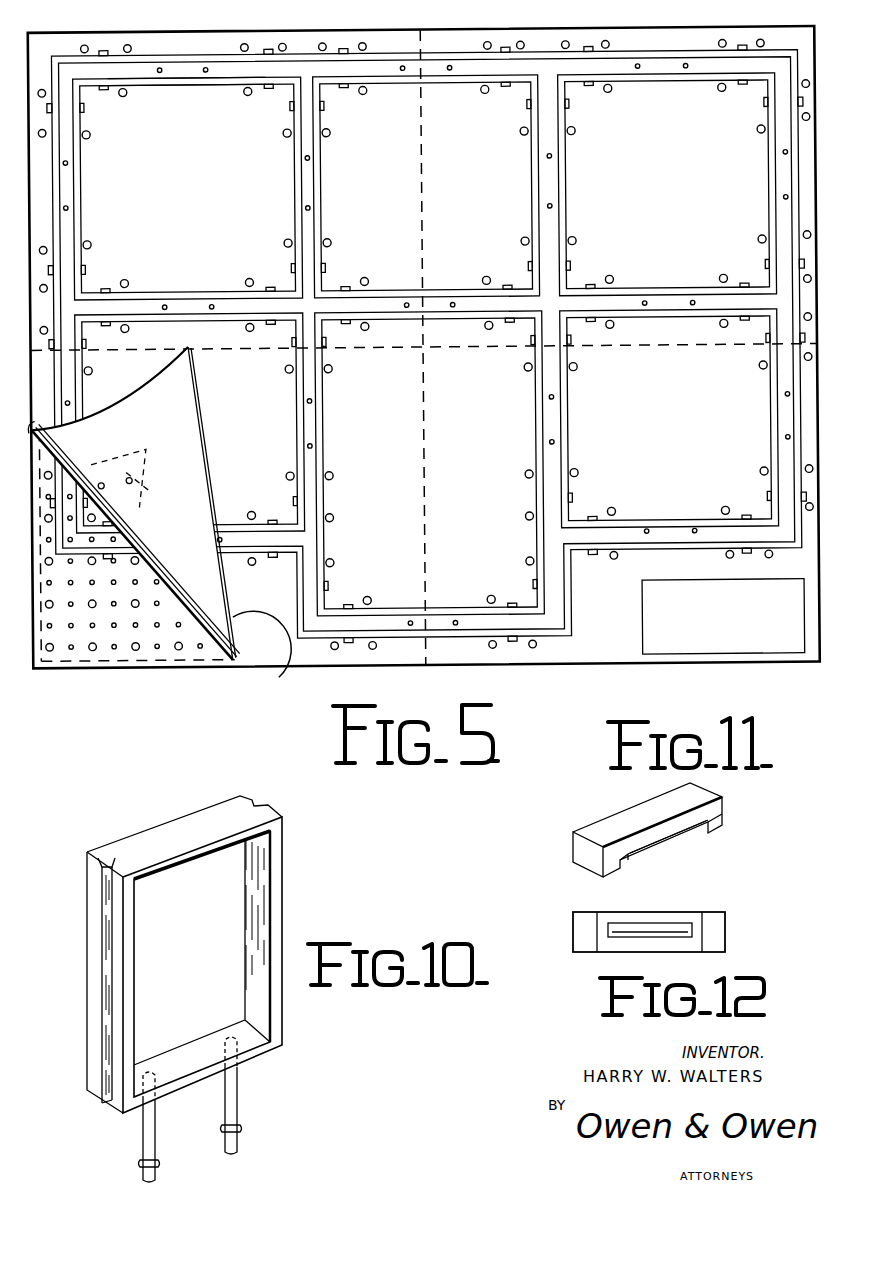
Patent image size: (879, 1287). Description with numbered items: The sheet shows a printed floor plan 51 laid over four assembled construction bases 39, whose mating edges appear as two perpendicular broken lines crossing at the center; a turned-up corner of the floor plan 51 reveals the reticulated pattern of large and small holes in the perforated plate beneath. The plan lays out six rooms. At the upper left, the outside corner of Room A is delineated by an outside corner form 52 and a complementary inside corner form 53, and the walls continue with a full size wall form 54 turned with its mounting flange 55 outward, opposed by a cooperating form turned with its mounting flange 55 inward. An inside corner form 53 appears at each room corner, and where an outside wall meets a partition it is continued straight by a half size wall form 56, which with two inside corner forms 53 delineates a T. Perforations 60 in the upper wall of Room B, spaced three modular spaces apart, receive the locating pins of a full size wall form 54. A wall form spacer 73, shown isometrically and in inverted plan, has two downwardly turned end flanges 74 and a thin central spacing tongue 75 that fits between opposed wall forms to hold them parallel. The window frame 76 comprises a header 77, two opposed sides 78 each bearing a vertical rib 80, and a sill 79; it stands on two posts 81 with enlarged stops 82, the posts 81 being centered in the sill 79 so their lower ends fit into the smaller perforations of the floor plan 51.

In FIG. 5, the construction base 39 is at (129, 674).
In FIG. 5, the floor plan 51 is at (280, 665).
In FIG. 5, the outside corner form 52 is at (63, 53).
In FIG. 5, the inside corner form 53 is at (292, 78).
In FIG. 5, the full size wall form 54 is at (188, 52).
In FIG. 5, the mounting flange 55 is at (118, 50).
In FIG. 5, the half size wall form 56 is at (357, 58).
In FIG. 5, the perforations 60 is at (368, 94).
In FIG. 11, the wall form spacer 73 is at (732, 813).
In FIG. 11, the end flanges 74 is at (720, 835).
In FIG. 12, the end flanges 74 is at (726, 930).
In FIG. 11, the spacing tongue 75 is at (663, 850).
In FIG. 12, the spacing tongue 75 is at (647, 923).
In FIG. 10, the window frame 76 is at (290, 896).
In FIG. 10, the header 77 is at (173, 832).
In FIG. 10, the sides 78 is at (285, 932).
In FIG. 10, the sill 79 is at (192, 1047).
In FIG. 10, the rib 80 is at (268, 804).
In FIG. 10, the posts 81 is at (237, 1093).
In FIG. 10, the enlarged stops 82 is at (240, 1128).